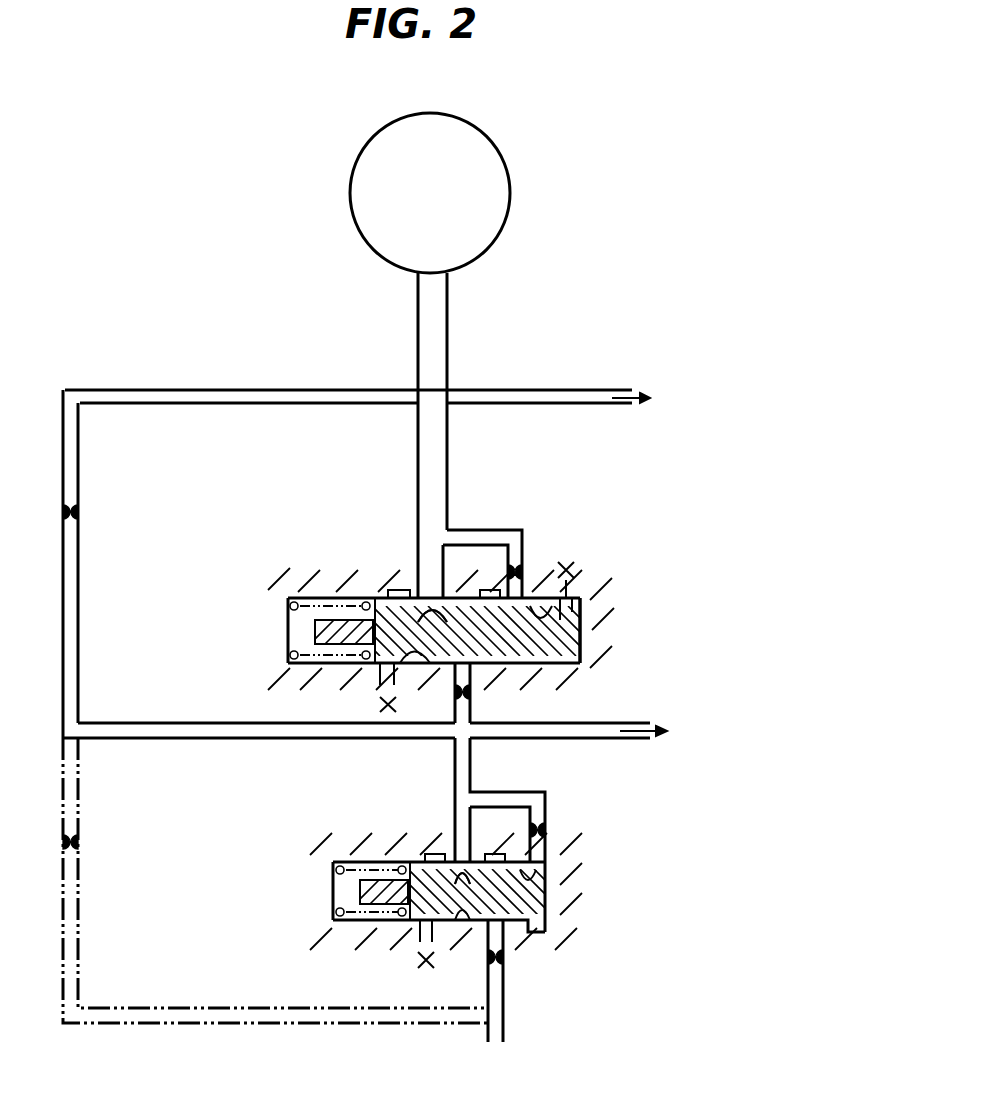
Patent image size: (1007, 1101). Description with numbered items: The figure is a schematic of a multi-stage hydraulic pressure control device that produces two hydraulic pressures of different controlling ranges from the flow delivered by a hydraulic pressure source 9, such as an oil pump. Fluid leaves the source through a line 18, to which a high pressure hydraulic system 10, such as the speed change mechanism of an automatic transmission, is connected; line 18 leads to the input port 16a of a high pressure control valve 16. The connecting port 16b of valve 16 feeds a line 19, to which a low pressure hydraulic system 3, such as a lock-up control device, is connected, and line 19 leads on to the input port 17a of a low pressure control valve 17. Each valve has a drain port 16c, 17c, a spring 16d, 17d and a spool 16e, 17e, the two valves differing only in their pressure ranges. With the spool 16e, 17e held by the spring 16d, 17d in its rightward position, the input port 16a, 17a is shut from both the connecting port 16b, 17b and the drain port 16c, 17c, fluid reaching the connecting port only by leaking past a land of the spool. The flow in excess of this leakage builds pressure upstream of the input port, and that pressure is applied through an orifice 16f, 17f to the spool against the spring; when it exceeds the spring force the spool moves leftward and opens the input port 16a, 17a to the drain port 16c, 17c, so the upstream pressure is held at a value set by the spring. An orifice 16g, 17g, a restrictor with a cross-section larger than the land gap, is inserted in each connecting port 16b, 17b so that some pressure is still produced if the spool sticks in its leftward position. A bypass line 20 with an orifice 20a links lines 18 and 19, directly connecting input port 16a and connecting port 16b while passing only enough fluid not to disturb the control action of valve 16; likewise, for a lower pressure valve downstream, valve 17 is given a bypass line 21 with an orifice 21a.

The hydraulic pressure source 9 is at (512, 195).
The line 18 is at (448, 330).
The high pressure hydraulic system 10 is at (575, 403).
The bypass line 20 is at (78, 402).
The orifice 20a is at (62, 514).
The high pressure control valve 16 is at (275, 610).
The input port 16a is at (432, 605).
The connecting port 16b is at (590, 660).
The drain port 16c is at (375, 680).
The spring 16d is at (300, 598).
The spool 16e is at (365, 600).
The orifice 16f is at (535, 572).
The orifice 16g is at (473, 692).
The low pressure hydraulic system 3 is at (600, 723).
The line 19 is at (472, 762).
The low pressure control valve 17 is at (315, 862).
The input port 17a is at (462, 866).
The connecting port 17b is at (505, 948).
The drain port 17c is at (415, 940).
The spring 17d is at (352, 862).
The spool 17e is at (550, 876).
The orifice 17f is at (548, 830).
The orifice 17g is at (506, 958).
The bypass line 21 is at (78, 1010).
The orifice 21a is at (80, 845).